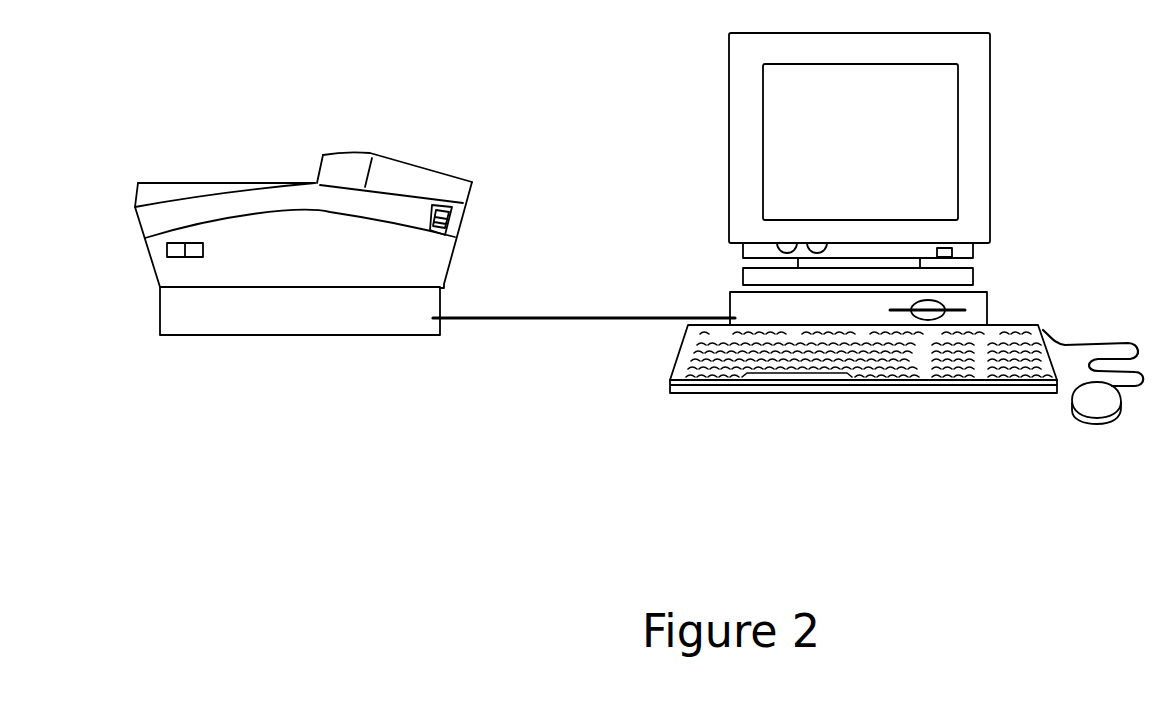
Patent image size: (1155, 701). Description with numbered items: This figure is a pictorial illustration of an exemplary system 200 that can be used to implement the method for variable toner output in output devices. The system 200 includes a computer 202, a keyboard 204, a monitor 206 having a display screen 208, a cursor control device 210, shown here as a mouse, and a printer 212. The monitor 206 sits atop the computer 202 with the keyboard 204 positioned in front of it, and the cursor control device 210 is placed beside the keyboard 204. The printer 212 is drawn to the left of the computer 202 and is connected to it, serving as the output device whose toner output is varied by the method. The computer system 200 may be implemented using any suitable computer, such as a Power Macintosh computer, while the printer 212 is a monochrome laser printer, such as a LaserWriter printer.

The system 200 is at (417, 493).
The computer 202 is at (996, 305).
The keyboard 204 is at (866, 397).
The monitor 206 is at (978, 61).
The display screen 208 is at (923, 117).
The cursor control device 210 is at (1090, 395).
The printer 212 is at (399, 167).